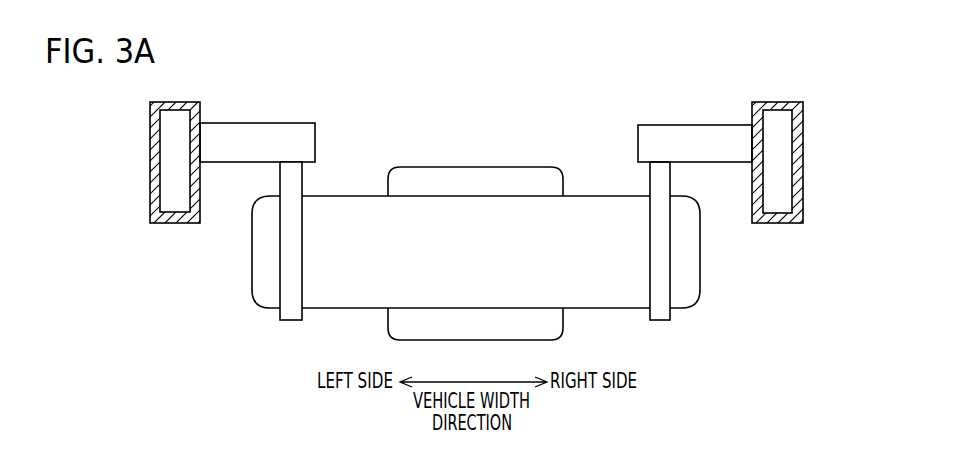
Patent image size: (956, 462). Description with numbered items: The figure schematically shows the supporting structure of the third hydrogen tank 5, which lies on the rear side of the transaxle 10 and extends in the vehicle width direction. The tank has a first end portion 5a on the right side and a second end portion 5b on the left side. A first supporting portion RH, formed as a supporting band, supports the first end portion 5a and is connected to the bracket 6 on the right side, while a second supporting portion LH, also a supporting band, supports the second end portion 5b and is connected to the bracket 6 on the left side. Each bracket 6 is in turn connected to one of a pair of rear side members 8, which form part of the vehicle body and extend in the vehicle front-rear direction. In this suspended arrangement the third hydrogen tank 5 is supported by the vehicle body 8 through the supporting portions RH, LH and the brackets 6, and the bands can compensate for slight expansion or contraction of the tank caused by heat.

The third hydrogen tank 5 is at (357, 294).
The first end portion 5a is at (685, 278).
The second end portion 5b is at (267, 290).
The bracket 6 is at (692, 137).
The rear side member (vehicle body) 8 is at (777, 108).
The transaxle 10 is at (480, 167).
The second supporting portion LH is at (291, 253).
The first supporting portion RH is at (660, 248).